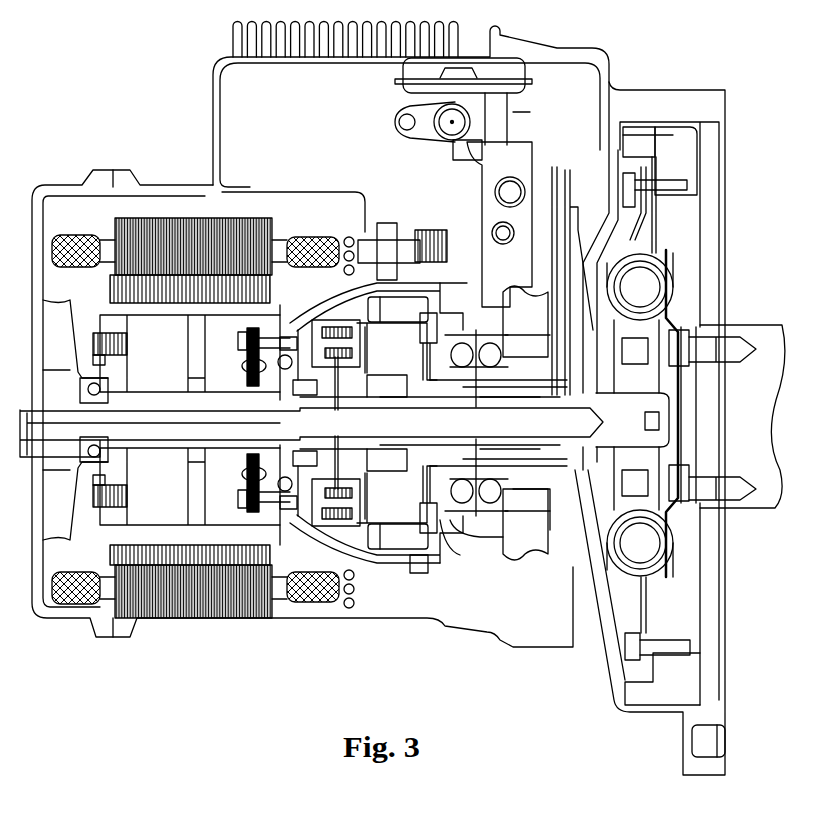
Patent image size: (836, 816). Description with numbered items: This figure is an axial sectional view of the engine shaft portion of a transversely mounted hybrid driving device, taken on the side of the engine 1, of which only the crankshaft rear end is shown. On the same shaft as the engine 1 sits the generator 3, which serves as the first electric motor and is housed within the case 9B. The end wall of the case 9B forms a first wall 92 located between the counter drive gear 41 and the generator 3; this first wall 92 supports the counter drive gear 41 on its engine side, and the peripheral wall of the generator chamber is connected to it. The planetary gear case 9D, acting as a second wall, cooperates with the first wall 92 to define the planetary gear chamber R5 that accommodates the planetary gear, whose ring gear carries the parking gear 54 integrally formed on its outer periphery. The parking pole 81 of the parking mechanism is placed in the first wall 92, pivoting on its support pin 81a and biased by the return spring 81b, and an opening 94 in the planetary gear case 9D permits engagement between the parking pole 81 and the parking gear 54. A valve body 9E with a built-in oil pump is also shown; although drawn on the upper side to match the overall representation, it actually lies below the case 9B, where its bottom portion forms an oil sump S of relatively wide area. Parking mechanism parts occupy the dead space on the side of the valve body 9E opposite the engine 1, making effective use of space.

The engine 1 is at (760, 322).
The generator 3 is at (180, 214).
The case 9B is at (213, 97).
The planetary gear case 9D is at (323, 540).
The valve body 9E is at (537, 143).
The oil sump S is at (344, 107).
The counter drive gear 41 is at (538, 503).
The parking gear 54 is at (380, 302).
The parking pole 81 is at (388, 232).
The support pin 81a is at (374, 240).
The return spring 81b is at (447, 237).
The first wall 92 is at (480, 540).
The opening 94 is at (357, 282).
The planetary gear chamber R5 is at (443, 553).